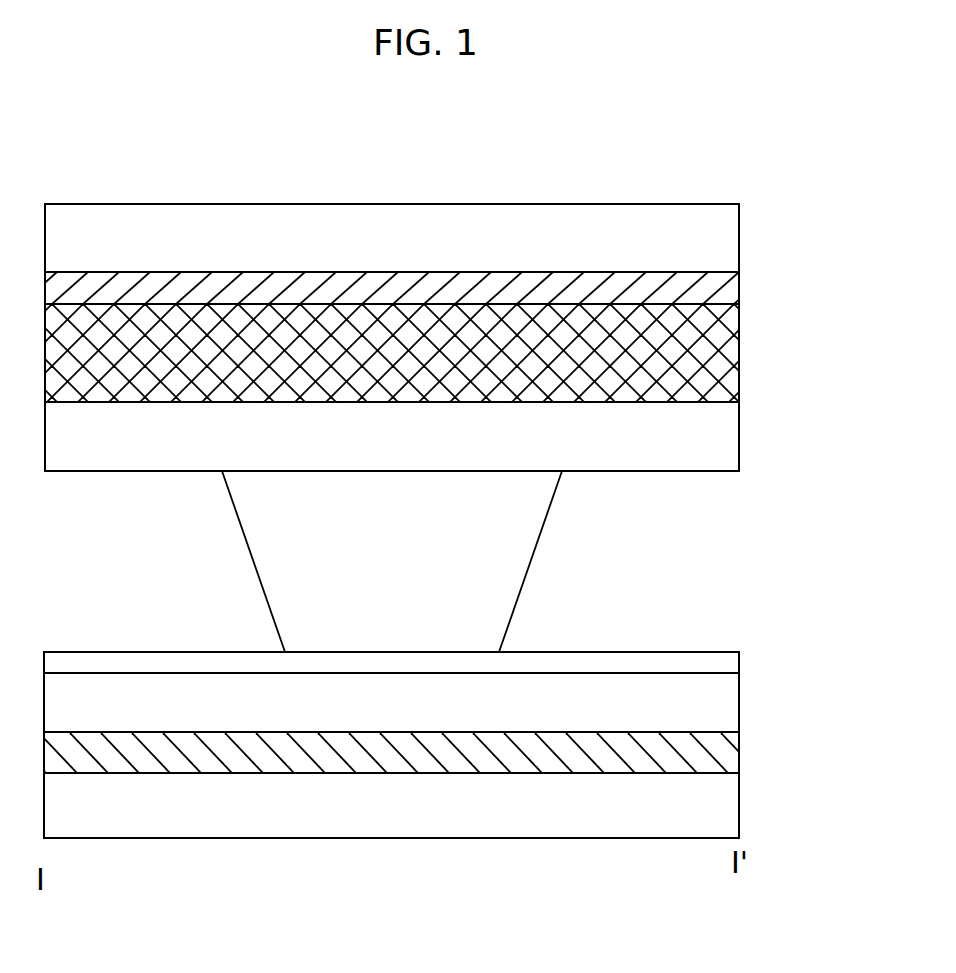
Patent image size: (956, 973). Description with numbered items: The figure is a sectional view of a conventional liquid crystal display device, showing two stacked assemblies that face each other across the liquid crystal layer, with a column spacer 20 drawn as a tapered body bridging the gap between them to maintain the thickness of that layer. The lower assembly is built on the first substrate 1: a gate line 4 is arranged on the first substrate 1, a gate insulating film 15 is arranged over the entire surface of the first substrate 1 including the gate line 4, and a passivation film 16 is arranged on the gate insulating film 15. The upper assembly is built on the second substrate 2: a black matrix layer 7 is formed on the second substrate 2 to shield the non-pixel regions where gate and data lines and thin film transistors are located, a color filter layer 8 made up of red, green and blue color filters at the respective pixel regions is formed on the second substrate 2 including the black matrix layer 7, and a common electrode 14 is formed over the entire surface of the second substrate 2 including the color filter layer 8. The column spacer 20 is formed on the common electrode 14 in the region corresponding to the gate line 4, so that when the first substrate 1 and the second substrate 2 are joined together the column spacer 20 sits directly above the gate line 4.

The first substrate 1 is at (725, 803).
The second substrate 2 is at (720, 242).
The gate line 4 is at (725, 750).
The black matrix layer 7 is at (720, 290).
The color filter layer 8 is at (720, 370).
The common electrode 14 is at (720, 435).
The gate insulating film 15 is at (725, 711).
The passivation film 16 is at (725, 663).
The column spacer 20 is at (512, 563).